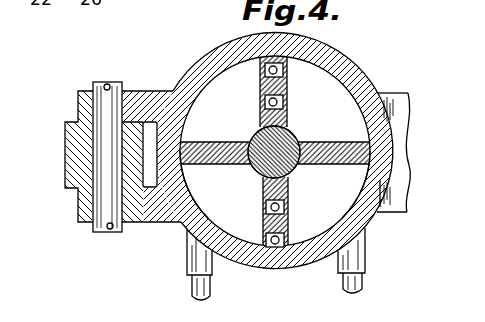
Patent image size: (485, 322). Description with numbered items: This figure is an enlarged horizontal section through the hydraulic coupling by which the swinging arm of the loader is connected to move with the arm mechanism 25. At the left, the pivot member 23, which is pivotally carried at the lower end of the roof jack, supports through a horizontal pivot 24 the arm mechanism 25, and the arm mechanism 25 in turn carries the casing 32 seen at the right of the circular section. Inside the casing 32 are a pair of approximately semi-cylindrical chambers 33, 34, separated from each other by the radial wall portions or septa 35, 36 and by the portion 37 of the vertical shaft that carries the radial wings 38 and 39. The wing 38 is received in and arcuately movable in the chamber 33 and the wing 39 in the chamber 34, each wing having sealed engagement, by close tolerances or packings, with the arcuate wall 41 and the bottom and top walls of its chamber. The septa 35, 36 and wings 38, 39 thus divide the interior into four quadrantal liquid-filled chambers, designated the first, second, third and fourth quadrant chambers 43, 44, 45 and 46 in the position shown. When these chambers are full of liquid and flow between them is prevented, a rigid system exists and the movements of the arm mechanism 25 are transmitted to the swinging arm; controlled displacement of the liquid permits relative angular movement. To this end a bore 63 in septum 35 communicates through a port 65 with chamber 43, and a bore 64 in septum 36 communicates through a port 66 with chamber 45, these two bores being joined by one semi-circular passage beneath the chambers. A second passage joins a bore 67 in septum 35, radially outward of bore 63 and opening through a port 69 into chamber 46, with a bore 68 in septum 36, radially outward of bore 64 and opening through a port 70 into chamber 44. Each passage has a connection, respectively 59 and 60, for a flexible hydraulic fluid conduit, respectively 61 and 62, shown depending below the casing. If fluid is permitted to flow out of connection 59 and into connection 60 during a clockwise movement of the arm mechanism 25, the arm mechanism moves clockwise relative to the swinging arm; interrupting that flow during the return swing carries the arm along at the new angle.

The pivot member 23 is at (66, 141).
The horizontal pivot 24 is at (107, 163).
The arm mechanism 25 is at (403, 135).
The casing 32 is at (381, 181).
The semi-cylindrical chamber 33 is at (345, 95).
The semi-cylindrical chamber 34 is at (220, 72).
The septum 35 is at (287, 80).
The septum 36 is at (289, 220).
The shaft portion 37 is at (290, 147).
The radial wing 38 is at (345, 147).
The radial wing 39 is at (207, 150).
The arcuate wall 41 is at (218, 70).
The first quadrant chamber 43 is at (378, 92).
The second quadrant chamber 44 is at (337, 205).
The third quadrant chamber 45 is at (217, 200).
The fourth quadrant chamber 46 is at (202, 103).
The connection 59 is at (360, 268).
The connection 60 is at (194, 270).
The flexible hydraulic fluid conduit 61 is at (356, 290).
The flexible hydraulic fluid conduit 62 is at (196, 293).
The bore 63 is at (268, 102).
The bore 64 is at (279, 207).
The port 65 is at (283, 103).
The port 66 is at (268, 209).
The bore 67 is at (277, 64).
The bore 68 is at (276, 248).
The port 69 is at (265, 70).
The port 70 is at (300, 247).